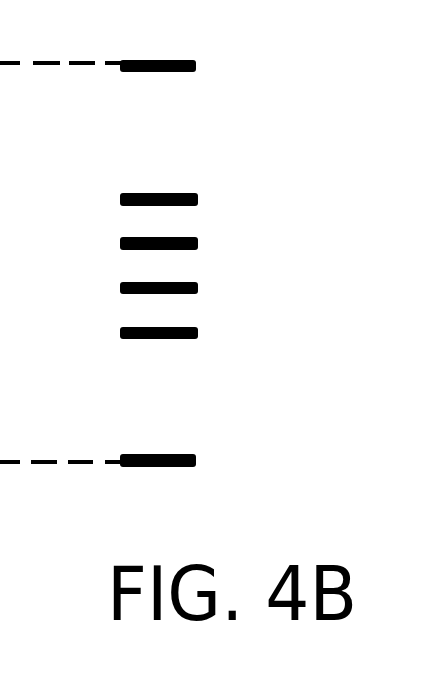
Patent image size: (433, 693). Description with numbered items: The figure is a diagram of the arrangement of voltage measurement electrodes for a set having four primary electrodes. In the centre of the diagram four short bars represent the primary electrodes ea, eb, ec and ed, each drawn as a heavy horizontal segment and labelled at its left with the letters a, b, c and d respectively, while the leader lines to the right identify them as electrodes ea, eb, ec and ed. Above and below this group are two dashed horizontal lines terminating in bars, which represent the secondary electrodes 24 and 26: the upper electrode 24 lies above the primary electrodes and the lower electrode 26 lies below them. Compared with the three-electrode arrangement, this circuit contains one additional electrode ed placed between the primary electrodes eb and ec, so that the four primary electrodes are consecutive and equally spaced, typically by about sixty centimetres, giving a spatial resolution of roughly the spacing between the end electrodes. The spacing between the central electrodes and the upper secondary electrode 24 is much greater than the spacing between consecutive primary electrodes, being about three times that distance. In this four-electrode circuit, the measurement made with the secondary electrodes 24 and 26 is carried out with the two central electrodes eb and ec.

The upper secondary electrode 24 is at (196, 62).
The lower secondary electrode 26 is at (196, 456).
The primary electrode ea is at (197, 194).
The primary electrode eb is at (197, 239).
The primary electrode ec is at (197, 283).
The additional primary electrode ed is at (197, 328).
The segment a label a is at (194, 189).
The segment b label b is at (194, 231).
The segment c label c is at (194, 277).
The segment d label d is at (194, 330).